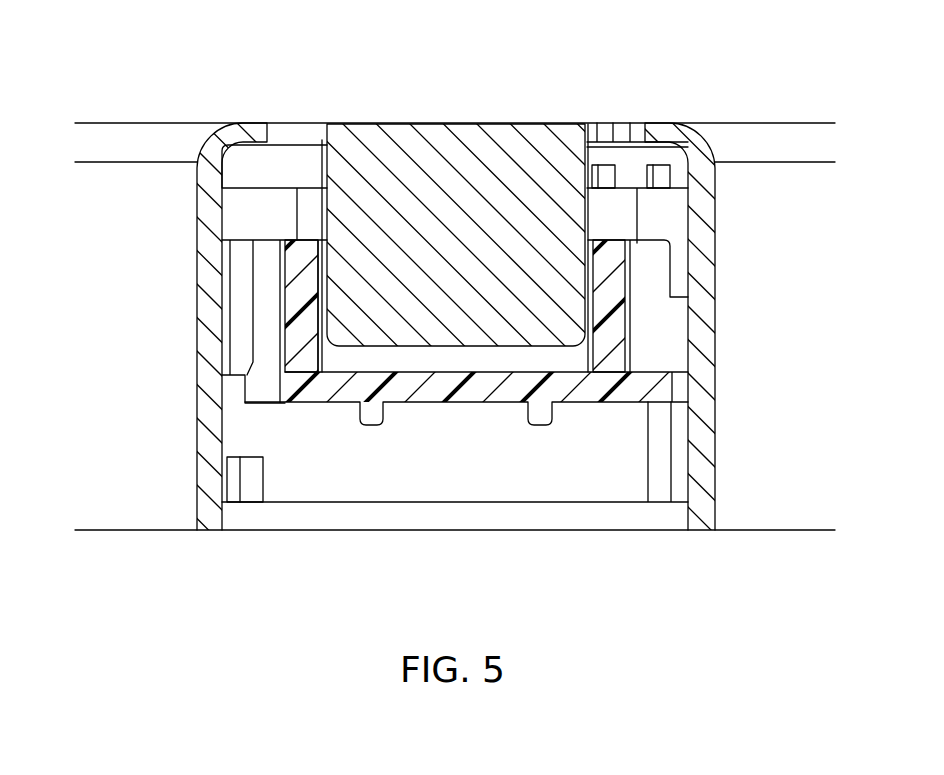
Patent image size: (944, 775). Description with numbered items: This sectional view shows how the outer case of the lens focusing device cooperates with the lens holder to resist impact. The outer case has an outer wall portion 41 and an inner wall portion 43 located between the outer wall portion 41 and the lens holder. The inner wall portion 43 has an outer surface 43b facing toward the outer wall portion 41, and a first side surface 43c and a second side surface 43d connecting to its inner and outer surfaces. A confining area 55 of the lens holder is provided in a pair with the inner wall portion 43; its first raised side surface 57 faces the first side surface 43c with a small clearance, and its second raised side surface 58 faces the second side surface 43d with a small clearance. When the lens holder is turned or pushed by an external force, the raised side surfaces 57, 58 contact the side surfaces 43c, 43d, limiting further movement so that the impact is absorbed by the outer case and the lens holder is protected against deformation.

The outer wall portion 41 is at (715, 266).
The inner wall portion 43 is at (476, 146).
The outer surface 43b is at (466, 348).
The first side surface 43c is at (587, 163).
The second side surface 43d is at (318, 205).
The confining area 55 is at (325, 411).
The first raised side surface 57 is at (587, 230).
The second raised side surface 58 is at (323, 231).